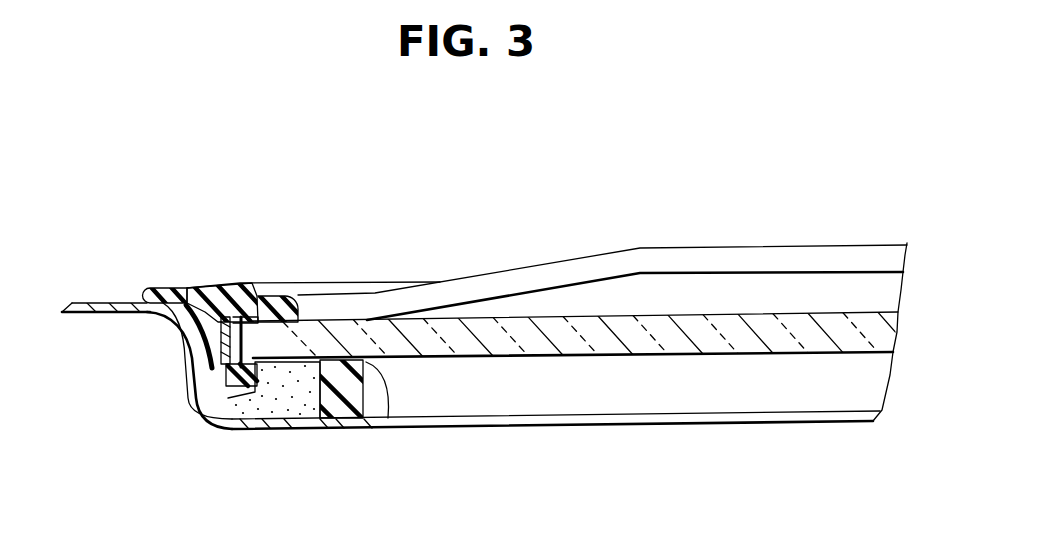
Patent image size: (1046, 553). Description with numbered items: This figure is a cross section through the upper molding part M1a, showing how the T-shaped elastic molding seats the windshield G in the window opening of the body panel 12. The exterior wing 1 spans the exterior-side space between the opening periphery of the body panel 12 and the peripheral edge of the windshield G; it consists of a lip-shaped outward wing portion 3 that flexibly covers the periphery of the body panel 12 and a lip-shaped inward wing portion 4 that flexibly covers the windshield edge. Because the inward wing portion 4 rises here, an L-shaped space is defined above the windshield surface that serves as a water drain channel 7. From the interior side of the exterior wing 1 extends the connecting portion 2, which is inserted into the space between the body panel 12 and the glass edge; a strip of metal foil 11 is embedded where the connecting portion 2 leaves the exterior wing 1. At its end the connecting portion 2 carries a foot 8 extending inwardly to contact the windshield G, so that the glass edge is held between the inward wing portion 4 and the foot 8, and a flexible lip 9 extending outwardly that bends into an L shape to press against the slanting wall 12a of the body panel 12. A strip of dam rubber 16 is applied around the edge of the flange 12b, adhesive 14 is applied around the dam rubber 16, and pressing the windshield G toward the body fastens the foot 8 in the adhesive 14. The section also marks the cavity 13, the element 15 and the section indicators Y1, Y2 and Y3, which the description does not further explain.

The exterior wing 1 is at (218, 282).
The connecting portion 2 is at (197, 410).
The outward wing portion 3 is at (165, 294).
The inward wing portion 4 is at (272, 300).
The water drain channel 7 is at (755, 292).
The foot 8 is at (247, 375).
The flexible lip 9 is at (187, 355).
The metal foil 11 is at (200, 380).
The body panel 12 is at (95, 303).
The slanting wall 12a is at (196, 331).
The flange 12b is at (283, 430).
The cavity 13 is at (485, 387).
The adhesive 14 is at (310, 407).
The engaging member 15 is at (192, 346).
The dam rubber 16 is at (377, 400).
The windshield G is at (781, 343).
The upper molding part M1a is at (206, 255).
The section line Y1 is at (523, 207).
The section line Y2 is at (681, 207).
The section line Y3 is at (833, 207).